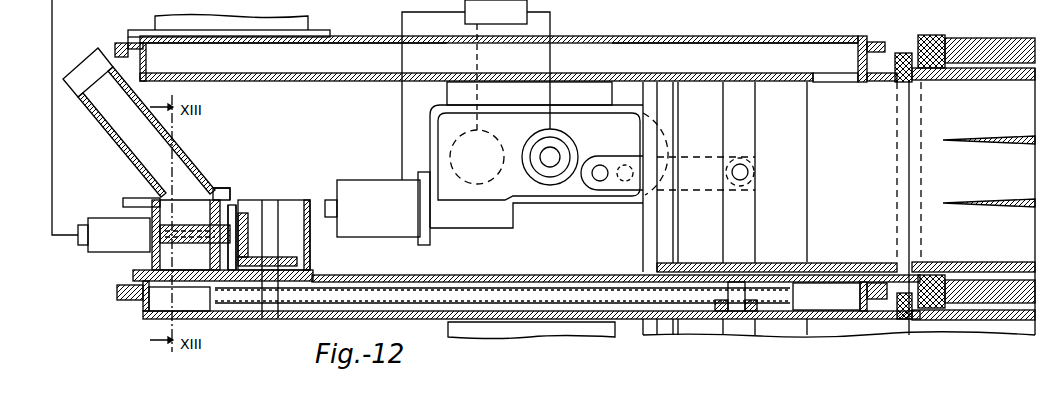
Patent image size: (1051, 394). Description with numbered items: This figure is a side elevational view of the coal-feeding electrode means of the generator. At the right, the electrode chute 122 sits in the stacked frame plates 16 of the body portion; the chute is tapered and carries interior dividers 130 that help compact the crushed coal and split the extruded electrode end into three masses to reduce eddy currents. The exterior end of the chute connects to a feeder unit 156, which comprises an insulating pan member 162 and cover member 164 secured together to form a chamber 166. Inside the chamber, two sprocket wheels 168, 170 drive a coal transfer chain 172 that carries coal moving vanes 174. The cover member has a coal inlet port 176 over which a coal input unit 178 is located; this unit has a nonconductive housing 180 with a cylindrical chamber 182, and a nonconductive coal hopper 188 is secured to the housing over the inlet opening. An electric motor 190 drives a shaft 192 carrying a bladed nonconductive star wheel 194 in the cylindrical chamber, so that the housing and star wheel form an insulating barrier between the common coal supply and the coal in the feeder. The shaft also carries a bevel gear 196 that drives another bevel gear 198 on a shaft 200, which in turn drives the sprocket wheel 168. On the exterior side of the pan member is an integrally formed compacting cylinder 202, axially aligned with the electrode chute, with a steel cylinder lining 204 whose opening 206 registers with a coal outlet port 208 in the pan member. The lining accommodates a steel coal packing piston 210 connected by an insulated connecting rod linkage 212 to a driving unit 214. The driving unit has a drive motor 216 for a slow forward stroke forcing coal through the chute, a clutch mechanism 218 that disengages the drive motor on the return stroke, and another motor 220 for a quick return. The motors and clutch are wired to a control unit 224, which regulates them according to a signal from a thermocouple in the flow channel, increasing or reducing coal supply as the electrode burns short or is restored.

The frame plate 16 is at (986, 38).
The electrode chute 122 is at (985, 81).
The divider 130 is at (988, 199).
The feeder unit 156 is at (656, 36).
The pan member 162 is at (343, 82).
The cover member 164 is at (370, 26).
The chamber 166 is at (285, 81).
The sprocket wheel 168 is at (237, 320).
The sprocket wheel 170 is at (706, 297).
The coal transfer chain 172 is at (520, 287).
The coal moving vane 174 is at (150, 306).
The coal inlet port 176 is at (203, 283).
The coal input unit 178 is at (126, 200).
The nonconductive housing 180 is at (248, 215).
The cylindrical chamber 182 is at (220, 192).
The coal hopper 188 is at (112, 145).
The electric motor 190 is at (105, 246).
The shaft 192 is at (235, 205).
The star wheel 194 is at (183, 208).
The bevel gear 196 is at (262, 212).
The bevel gear 198 is at (300, 263).
The shaft 200 is at (270, 250).
The compacting cylinder 202 is at (647, 221).
The cylinder lining 204 is at (770, 262).
The opening 206 is at (848, 83).
The coal outlet port 208 is at (813, 72).
The coal packing piston 210 is at (807, 162).
The insulated connecting rod linkage 212 is at (608, 165).
The driving unit 214 is at (535, 200).
The drive motor 216 is at (565, 140).
The clutch mechanism 218 is at (493, 143).
The motor 220 is at (361, 182).
The control unit 224 is at (481, 65).